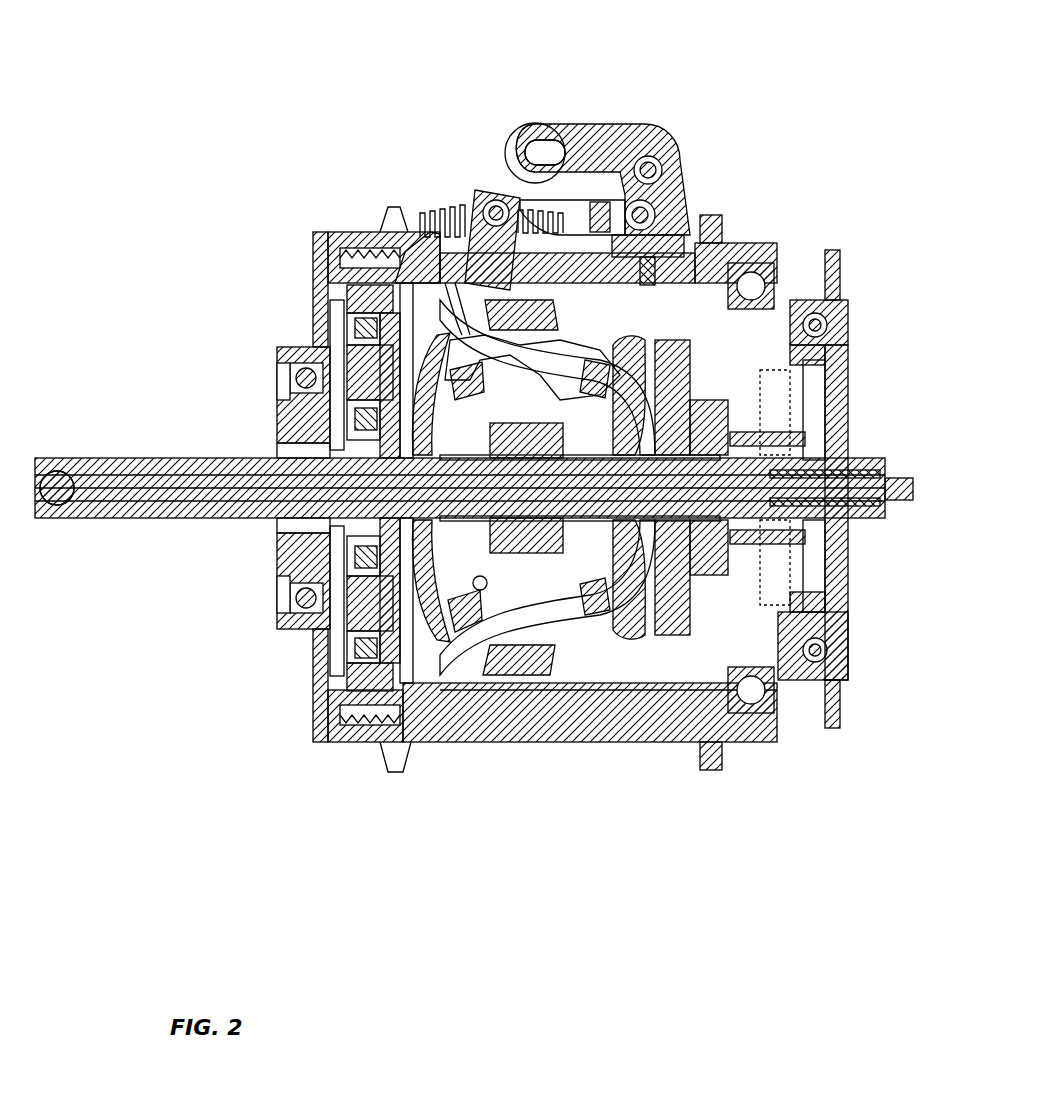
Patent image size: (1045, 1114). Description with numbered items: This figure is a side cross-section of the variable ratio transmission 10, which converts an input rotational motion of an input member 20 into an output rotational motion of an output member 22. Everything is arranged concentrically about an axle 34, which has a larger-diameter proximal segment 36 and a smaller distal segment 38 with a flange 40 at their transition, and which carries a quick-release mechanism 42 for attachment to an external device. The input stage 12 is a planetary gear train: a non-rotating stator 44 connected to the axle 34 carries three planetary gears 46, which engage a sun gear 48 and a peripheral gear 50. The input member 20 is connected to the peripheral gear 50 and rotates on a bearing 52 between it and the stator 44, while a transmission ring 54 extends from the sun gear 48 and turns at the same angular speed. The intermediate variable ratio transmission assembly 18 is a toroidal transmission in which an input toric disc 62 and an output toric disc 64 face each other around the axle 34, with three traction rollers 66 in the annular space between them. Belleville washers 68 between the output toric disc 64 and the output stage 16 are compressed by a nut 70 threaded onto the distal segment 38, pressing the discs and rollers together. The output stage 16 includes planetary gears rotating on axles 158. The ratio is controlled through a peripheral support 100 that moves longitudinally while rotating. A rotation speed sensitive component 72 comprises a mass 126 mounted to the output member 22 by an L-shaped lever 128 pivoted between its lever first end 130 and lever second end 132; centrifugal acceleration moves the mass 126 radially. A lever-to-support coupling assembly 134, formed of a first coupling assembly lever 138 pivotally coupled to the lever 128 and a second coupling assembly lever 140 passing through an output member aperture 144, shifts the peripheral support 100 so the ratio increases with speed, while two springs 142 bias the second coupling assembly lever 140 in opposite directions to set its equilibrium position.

The variable ratio transmission 10 is at (213, 93).
The input stage 12 is at (793, 290).
The output stage 16 is at (330, 690).
The variable ratio transmission assembly 18 is at (410, 343).
The input member 20 is at (838, 252).
The output member 22 is at (460, 285).
The axle 34 is at (102, 455).
The proximal segment 36 is at (150, 465).
The distal segment 38 is at (815, 540).
The flange 40 is at (680, 640).
The quick-release mechanism 42 is at (60, 450).
The stator 44 is at (838, 383).
The planetary gears 46 is at (790, 350).
The sun gear 48 is at (783, 425).
The peripheral gear 50 is at (780, 330).
The bearing 52 is at (830, 325).
The transmission ring 54 is at (790, 440).
The input toric disc 62 is at (640, 640).
The output toric disc 64 is at (420, 640).
The traction rollers 66 is at (395, 294).
The Belleville washers 68 is at (340, 573).
The nut 70 is at (840, 505).
The rotation speed sensitive component 72 is at (655, 140).
The peripheral support 100 is at (455, 320).
The mass 126 is at (530, 128).
The lever 128 is at (552, 145).
The lever first end 130 is at (665, 215).
The lever second end 132 is at (545, 135).
The lever-to-support coupling assembly 134 is at (492, 195).
The first coupling assembly lever 138 is at (570, 210).
The second coupling assembly lever 140 is at (470, 330).
The springs 142 is at (447, 210).
The output member aperture 144 is at (403, 250).
The axles 158 is at (357, 350).